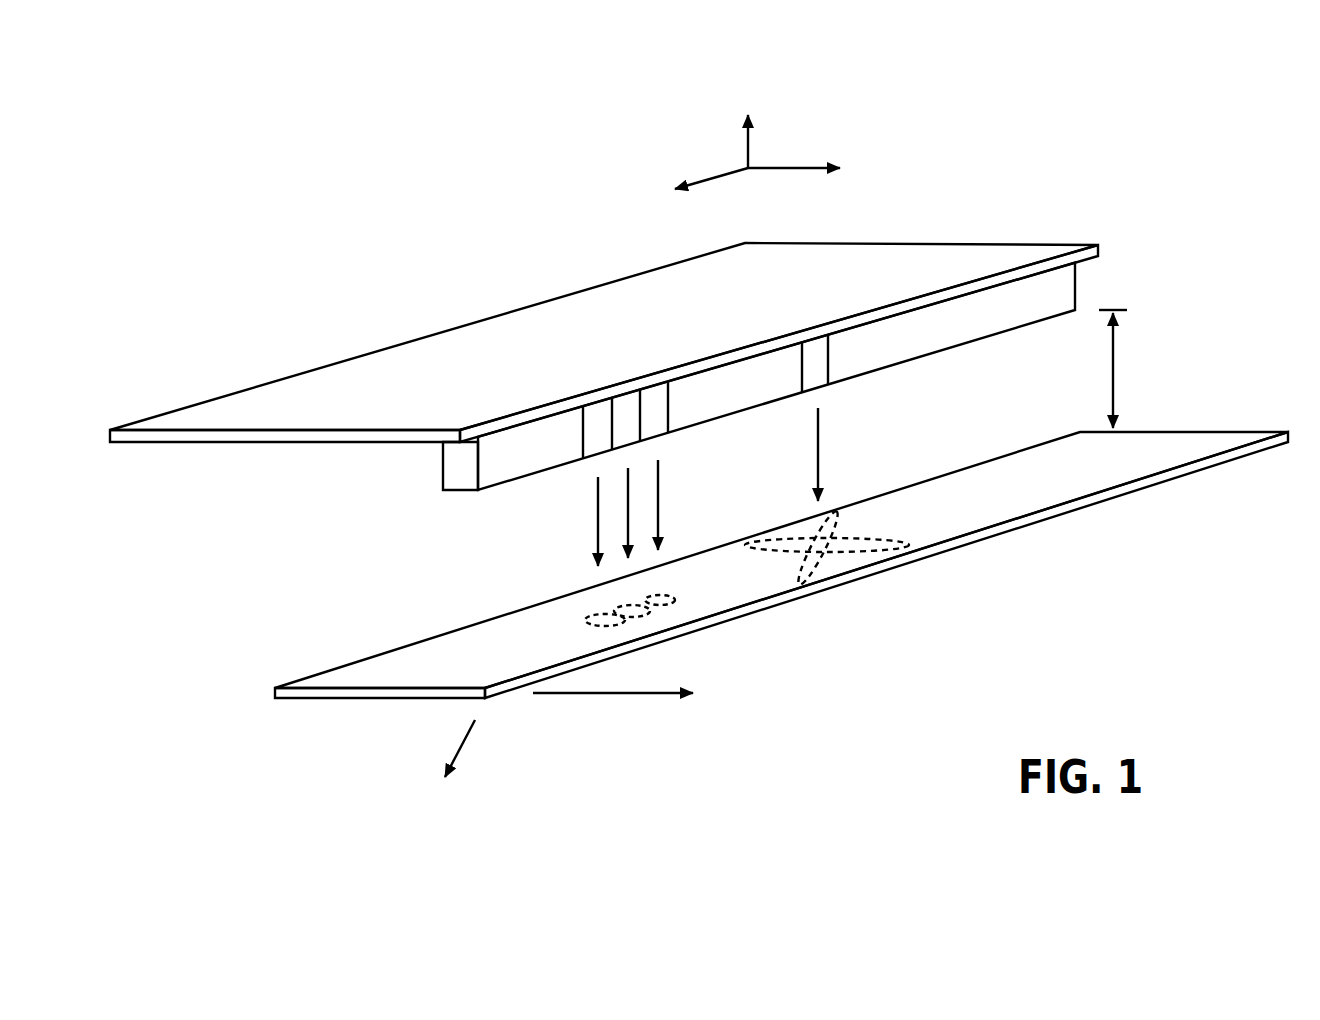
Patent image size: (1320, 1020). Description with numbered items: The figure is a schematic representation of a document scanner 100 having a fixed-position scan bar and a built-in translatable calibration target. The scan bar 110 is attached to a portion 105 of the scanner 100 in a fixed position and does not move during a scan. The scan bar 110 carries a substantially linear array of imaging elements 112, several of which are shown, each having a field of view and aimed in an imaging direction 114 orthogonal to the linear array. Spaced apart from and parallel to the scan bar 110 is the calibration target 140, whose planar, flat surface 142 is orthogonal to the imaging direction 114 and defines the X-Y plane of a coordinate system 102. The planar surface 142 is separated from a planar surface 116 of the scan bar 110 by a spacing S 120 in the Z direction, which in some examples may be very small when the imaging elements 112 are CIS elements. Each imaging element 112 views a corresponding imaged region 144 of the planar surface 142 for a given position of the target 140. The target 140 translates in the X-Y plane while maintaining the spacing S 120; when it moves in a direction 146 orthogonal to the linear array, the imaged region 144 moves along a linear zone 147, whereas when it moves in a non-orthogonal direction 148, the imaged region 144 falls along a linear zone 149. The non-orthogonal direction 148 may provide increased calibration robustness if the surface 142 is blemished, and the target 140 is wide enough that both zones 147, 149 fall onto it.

The scanner 100 is at (265, 185).
The coordinate system 102 is at (767, 168).
The portion of the scanner 105 is at (972, 245).
The scan bar 110 is at (440, 467).
The imaging elements 112 is at (653, 410).
The imaging direction 114 is at (563, 543).
The planar surface of the scan bar 116 is at (494, 509).
The spacing S 120 is at (1113, 372).
The calibration target 140 is at (781, 547).
The planar surface 142 is at (1148, 453).
The imaged region 144 is at (823, 548).
The direction orthogonal to the linear array 146 is at (595, 696).
The linear zone 147 is at (883, 550).
The non-orthogonal direction 148 is at (461, 747).
The linear zone 149 is at (820, 530).